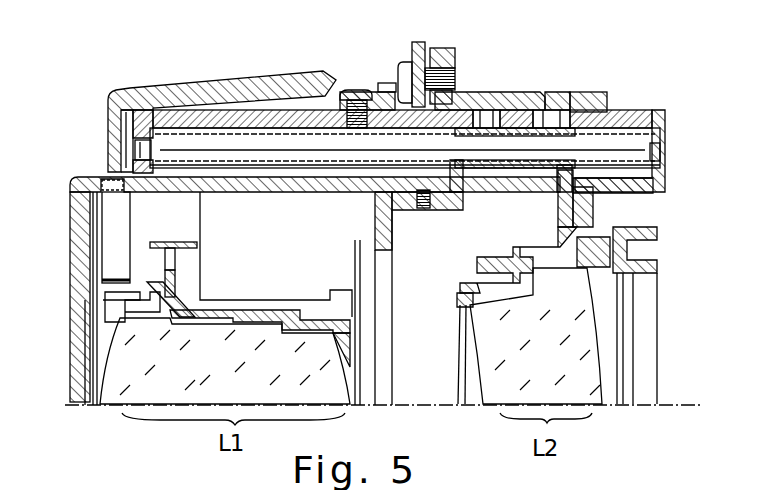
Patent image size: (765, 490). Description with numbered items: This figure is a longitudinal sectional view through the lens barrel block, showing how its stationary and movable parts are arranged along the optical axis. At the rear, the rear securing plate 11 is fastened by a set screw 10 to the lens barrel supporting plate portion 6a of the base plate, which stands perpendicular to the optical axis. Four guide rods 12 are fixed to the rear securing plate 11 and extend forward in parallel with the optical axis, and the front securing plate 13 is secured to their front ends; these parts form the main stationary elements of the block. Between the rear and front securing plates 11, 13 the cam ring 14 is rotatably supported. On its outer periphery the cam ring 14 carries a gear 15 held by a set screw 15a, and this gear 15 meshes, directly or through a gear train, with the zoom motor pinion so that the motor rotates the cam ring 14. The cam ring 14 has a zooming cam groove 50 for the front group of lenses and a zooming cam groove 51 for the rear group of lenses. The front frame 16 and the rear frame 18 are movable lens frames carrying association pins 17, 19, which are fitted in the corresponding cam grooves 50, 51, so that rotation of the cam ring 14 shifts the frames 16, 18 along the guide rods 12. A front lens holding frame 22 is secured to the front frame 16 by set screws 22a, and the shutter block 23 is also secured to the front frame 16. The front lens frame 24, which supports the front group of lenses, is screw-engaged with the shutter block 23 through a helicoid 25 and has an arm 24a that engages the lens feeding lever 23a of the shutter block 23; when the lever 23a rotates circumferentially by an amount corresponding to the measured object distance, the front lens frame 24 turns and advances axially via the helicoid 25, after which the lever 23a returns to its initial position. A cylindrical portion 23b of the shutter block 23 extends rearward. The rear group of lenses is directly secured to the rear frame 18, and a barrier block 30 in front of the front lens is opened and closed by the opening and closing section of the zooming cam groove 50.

The lens barrel supporting plate portion 6a is at (420, 44).
The set screw 10 is at (456, 76).
The rear securing plate 11 is at (603, 97).
The guide rod 12 is at (283, 138).
The front securing plate 13 is at (143, 106).
The cam ring 14 is at (218, 112).
The gear 15 is at (390, 88).
The set screw 15a is at (358, 90).
The front frame 16 is at (456, 212).
The association pin 17 is at (486, 112).
The rear frame 18 is at (560, 219).
The association pin 19 is at (554, 112).
The front lens holding frame 22 is at (303, 192).
The set screw 22a is at (420, 212).
The shutter block 23 is at (253, 250).
The lens feeding lever 23a is at (183, 246).
The cylindrical portion 23b is at (362, 376).
The front lens frame 24 is at (190, 316).
The arm 24a is at (168, 260).
The helicoid 25 is at (260, 310).
The barrier block 30 is at (112, 203).
The zooming cam groove 50 is at (528, 93).
The zooming cam groove 51 is at (605, 92).